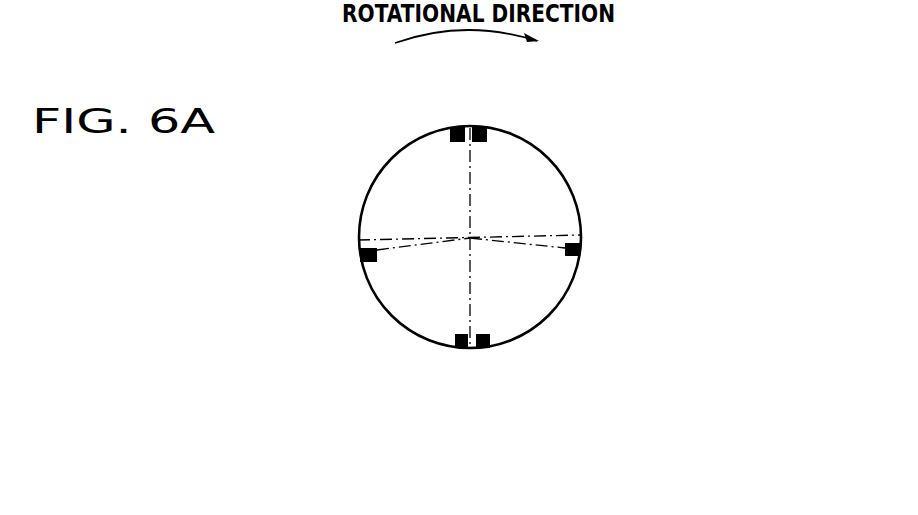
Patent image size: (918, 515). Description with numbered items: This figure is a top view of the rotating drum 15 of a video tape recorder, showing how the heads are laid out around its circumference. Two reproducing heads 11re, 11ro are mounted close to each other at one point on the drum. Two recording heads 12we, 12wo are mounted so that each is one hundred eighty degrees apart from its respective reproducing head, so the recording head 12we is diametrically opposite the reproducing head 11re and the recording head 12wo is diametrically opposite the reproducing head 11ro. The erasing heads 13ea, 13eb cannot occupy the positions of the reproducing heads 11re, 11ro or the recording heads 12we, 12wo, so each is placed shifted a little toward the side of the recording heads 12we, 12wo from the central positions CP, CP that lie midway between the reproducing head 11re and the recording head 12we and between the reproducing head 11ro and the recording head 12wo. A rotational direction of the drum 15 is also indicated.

The rotating drum 15 is at (548, 158).
The central position CP is at (359, 241).
The reproducing head 11ro is at (457, 127).
The reproducing head 11re is at (480, 127).
The recording head 12wo is at (483, 349).
The recording head 12we is at (458, 349).
The erasing head 13ea is at (361, 258).
The erasing head 13eb is at (580, 248).